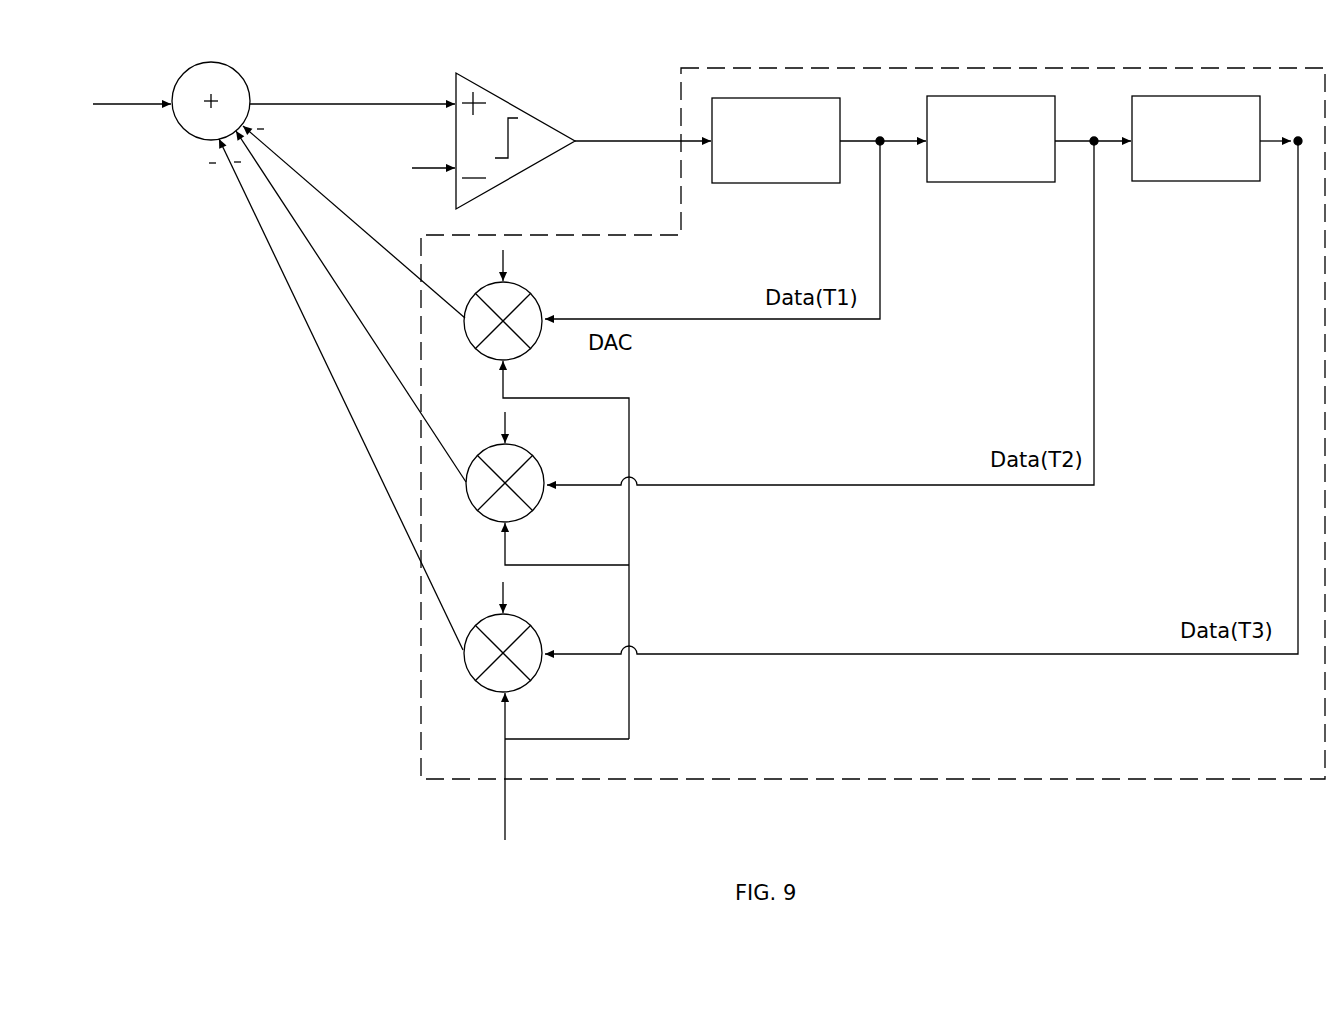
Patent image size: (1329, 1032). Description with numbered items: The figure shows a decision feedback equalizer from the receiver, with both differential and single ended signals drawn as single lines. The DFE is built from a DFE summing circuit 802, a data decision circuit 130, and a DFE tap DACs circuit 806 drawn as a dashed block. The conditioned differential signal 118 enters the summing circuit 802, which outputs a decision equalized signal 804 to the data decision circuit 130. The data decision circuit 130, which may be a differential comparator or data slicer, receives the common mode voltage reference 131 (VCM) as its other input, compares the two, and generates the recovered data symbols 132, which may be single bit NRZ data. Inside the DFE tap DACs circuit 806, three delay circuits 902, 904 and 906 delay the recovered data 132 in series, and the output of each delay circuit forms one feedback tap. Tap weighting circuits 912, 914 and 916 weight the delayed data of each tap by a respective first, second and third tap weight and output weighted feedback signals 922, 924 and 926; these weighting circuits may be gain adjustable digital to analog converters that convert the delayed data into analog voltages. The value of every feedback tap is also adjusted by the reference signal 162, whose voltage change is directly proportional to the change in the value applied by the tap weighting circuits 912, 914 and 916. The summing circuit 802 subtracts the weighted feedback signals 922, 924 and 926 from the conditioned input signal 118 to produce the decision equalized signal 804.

The conditioned differential signal 118 is at (91, 80).
The DFE summing circuit 802 is at (183, 138).
The decision equalized signal 804 is at (346, 90).
The data decision circuit 130 is at (526, 92).
The common mode voltage reference 131 is at (412, 176).
The recovered data symbols 132 is at (643, 142).
The DFE tap DACs circuit 806 is at (1217, 781).
The delay circuit 902 is at (776, 140).
The delay circuit 904 is at (991, 139).
The delay circuit 906 is at (1196, 138).
The tap weighting circuit 912 is at (540, 303).
The tap weighting circuit 914 is at (540, 459).
The tap weighting circuit 916 is at (538, 628).
The reference signal 162 is at (503, 822).
The weighted feedback signal 922 is at (418, 283).
The weighted feedback signal 924 is at (425, 421).
The weighted feedback signal 926 is at (408, 539).